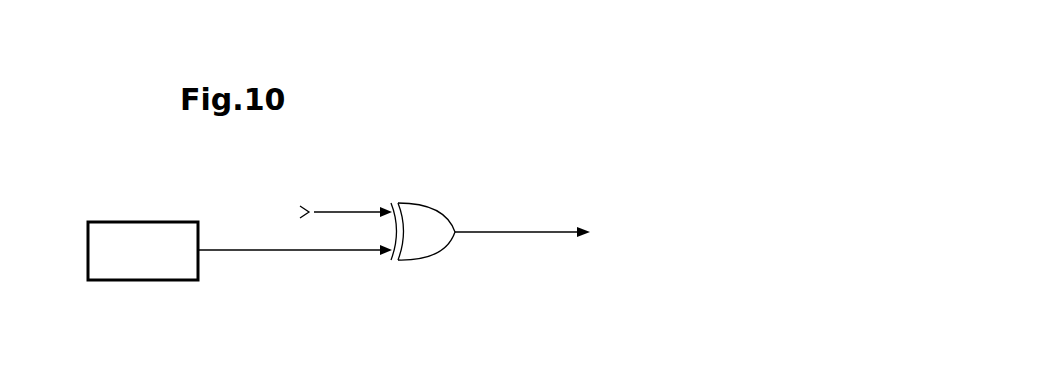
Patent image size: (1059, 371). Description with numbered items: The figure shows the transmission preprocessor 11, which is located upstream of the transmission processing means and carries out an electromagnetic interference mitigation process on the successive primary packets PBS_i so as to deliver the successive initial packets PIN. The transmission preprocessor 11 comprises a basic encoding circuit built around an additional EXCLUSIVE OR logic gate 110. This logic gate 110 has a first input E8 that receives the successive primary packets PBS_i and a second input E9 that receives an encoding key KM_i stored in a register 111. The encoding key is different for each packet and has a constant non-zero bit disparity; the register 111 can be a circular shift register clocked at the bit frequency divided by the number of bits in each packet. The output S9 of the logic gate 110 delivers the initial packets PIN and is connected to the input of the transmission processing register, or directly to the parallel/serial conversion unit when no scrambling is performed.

The transmission preprocessor 11 is at (440, 160).
The register 111 is at (140, 280).
The EXCLUSIVE OR logic gate 110 is at (447, 250).
The first input E8 is at (375, 224).
The input E9 is at (378, 236).
The output S9 is at (452, 225).
The initial packets PIN is at (518, 233).